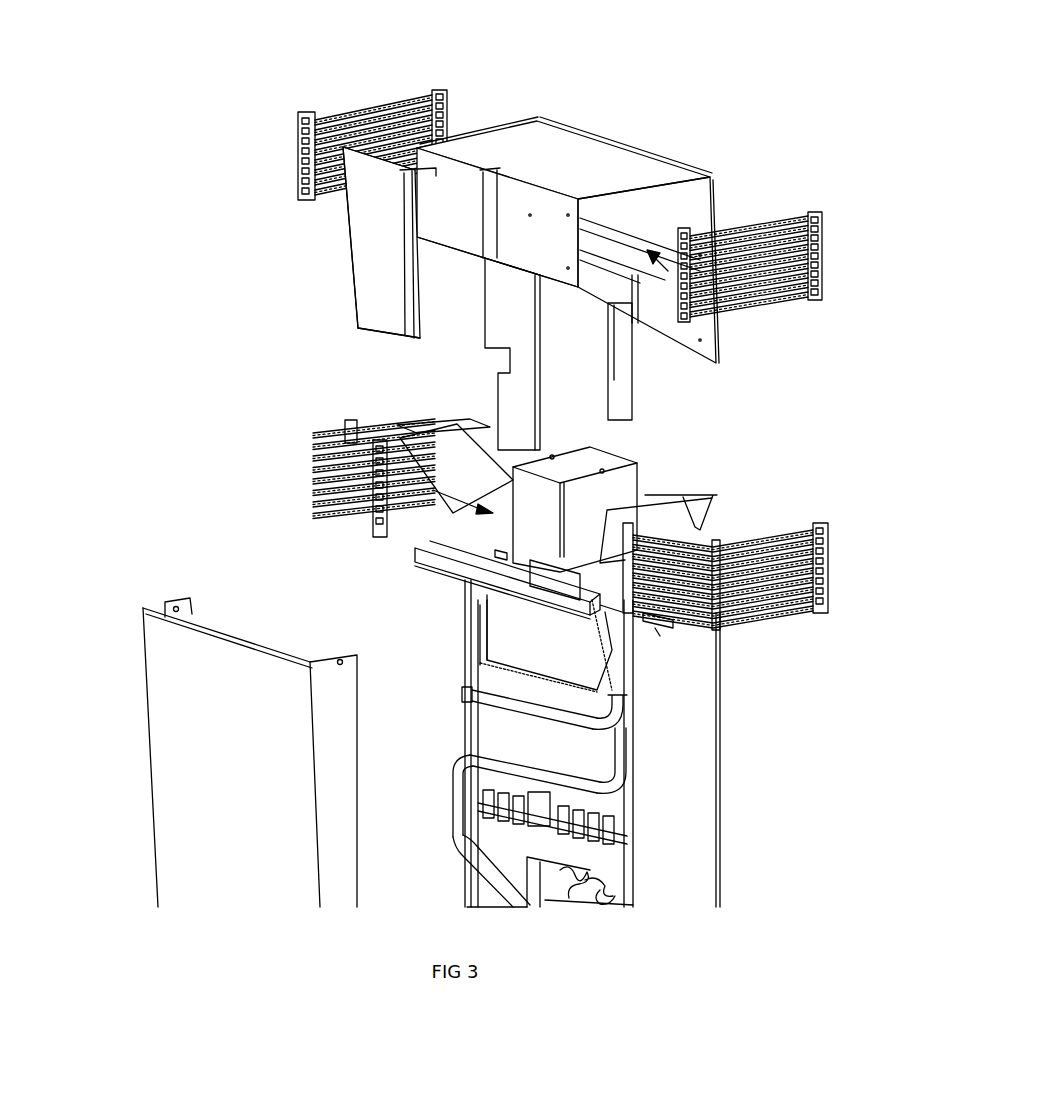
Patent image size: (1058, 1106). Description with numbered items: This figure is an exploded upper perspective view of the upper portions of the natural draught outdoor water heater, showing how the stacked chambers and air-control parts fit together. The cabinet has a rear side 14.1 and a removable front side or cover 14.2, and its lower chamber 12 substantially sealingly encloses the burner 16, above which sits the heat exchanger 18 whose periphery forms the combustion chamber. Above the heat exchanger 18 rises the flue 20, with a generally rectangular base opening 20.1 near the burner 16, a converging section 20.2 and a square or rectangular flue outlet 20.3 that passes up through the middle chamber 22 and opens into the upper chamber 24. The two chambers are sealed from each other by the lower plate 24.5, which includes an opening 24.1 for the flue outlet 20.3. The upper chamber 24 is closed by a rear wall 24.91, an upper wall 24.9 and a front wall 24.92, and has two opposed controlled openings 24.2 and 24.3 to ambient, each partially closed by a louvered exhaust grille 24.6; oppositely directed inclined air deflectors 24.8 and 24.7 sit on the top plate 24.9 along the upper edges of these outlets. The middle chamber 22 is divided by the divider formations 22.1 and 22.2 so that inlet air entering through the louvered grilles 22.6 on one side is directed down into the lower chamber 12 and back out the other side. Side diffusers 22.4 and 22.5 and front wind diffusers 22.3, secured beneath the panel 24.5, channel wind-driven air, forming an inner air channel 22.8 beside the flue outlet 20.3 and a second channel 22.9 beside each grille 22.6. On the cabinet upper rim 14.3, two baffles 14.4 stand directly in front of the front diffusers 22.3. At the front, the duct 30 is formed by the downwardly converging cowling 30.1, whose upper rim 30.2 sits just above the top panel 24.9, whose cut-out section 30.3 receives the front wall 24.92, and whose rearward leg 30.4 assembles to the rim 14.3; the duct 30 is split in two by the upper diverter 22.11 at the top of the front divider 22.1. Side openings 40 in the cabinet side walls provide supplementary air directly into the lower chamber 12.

The lower chamber 12 is at (598, 704).
The rear side 14.1 is at (680, 787).
The front side or cover 14.2 is at (180, 790).
The upper rim 14.3 is at (545, 598).
The diverters or baffles 14.4 is at (478, 628).
The burner 16 is at (573, 838).
The heat exchanger 18 is at (580, 750).
The flue 20 is at (581, 656).
The base opening 20.1 is at (497, 662).
The converging section 20.2 is at (485, 593).
The flue outlet 20.3 is at (620, 480).
The middle chamber 22 is at (549, 517).
The divider formation 22.1 is at (493, 306).
The upper diverter 22.11 is at (487, 195).
The divider formation 22.2 is at (622, 303).
The front wind diffuser 22.3 is at (490, 427).
The side diffuser 22.4 is at (682, 537).
The side diffuser 22.5 is at (440, 473).
The grille 22.6 is at (317, 455).
The inner air channel 22.8 is at (641, 486).
The second channel 22.9 is at (327, 510).
The upper chamber 24 is at (567, 208).
The opening 24.1 is at (592, 245).
The controlled opening 24.2 is at (700, 227).
The controlled opening 24.3 is at (502, 120).
The lower plate 24.5 is at (650, 265).
The exhaust grille 24.6 is at (388, 112).
The air deflector 24.7 is at (592, 187).
The air deflector 24.8 is at (537, 120).
The closed upper wall 24.9 is at (660, 165).
The closed rear wall 24.91 is at (700, 223).
The closed front wall 24.92 is at (530, 242).
The front air tunnel or duct 30 is at (339, 268).
The cowling 30.1 is at (358, 224).
The upper rim 30.2 is at (317, 145).
The upper cut-out section 30.3 is at (420, 240).
The lower rearwardly directed leg 30.4 is at (420, 338).
The side openings 40 is at (500, 557).